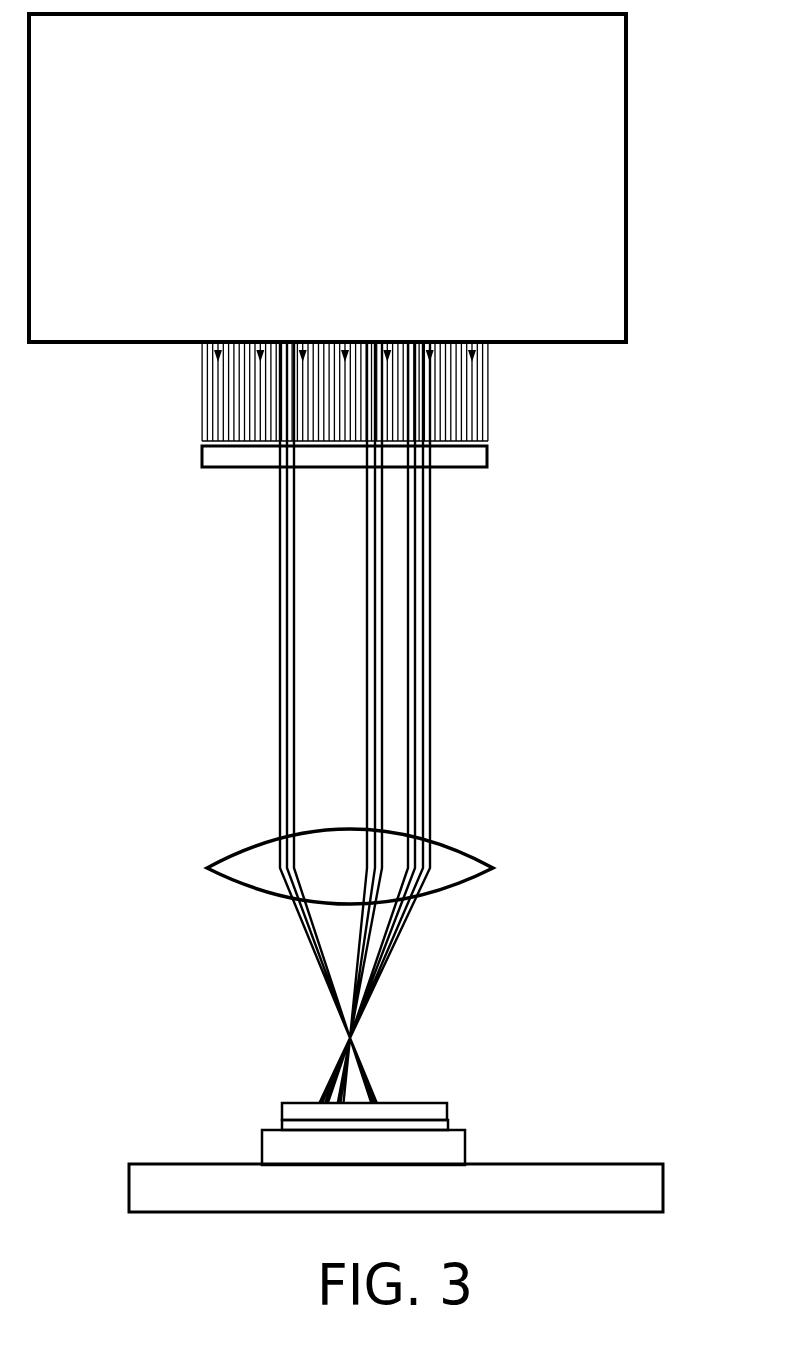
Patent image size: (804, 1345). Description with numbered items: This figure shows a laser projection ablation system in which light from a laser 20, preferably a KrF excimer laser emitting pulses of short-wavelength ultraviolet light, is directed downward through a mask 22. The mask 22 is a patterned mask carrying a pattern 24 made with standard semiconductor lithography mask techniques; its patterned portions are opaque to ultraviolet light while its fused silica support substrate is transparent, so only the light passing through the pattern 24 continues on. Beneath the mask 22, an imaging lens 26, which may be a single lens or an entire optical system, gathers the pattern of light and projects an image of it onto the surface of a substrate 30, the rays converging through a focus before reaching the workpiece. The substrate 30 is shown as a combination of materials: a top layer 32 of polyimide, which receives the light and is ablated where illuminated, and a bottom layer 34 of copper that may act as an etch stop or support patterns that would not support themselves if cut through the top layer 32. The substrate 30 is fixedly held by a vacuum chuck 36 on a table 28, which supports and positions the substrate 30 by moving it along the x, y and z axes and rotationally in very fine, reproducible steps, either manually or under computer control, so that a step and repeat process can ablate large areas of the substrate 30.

The laser 20 is at (627, 220).
The mask 22 is at (487, 457).
The pattern 24 is at (430, 418).
The imaging lens 26 is at (493, 867).
The table 28 is at (663, 1186).
The substrate 30 is at (386, 1101).
The top layer 32 is at (447, 1108).
The bottom layer 34 is at (448, 1123).
The vacuum chuck 36 is at (465, 1145).